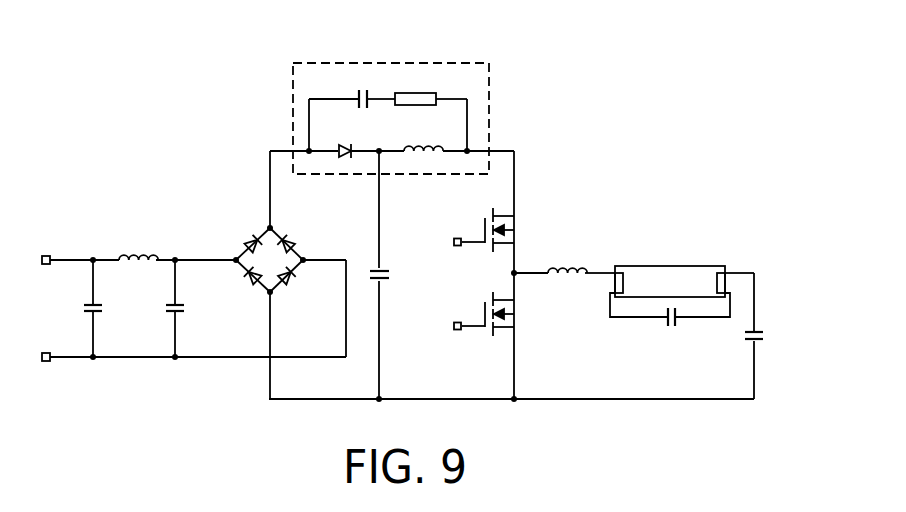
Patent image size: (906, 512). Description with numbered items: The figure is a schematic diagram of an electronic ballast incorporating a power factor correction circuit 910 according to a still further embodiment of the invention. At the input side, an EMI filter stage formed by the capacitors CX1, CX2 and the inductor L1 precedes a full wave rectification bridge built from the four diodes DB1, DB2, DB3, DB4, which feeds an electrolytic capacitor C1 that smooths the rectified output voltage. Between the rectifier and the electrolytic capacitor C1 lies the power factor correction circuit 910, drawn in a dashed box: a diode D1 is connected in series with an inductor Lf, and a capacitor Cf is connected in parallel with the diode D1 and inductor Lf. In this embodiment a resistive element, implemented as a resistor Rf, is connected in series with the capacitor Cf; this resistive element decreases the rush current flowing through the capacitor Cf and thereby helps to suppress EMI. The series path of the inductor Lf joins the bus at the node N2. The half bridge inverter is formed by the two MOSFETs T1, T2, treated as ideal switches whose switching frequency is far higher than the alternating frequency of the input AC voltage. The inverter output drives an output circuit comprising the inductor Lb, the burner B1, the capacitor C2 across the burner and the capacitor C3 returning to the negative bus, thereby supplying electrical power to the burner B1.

The power factor correction circuit 910 is at (293, 82).
The node N2 is at (467, 151).
The capacitor Cf is at (363, 88).
The resistor Rf is at (415, 87).
The diode D1 is at (345, 141).
The inductor Lf is at (423, 138).
The input inductor L1 is at (138, 247).
The input capacitor CX1 is at (75, 308).
The input capacitor CX2 is at (157, 308).
The diode DB1 is at (301, 235).
The diode DB2 is at (238, 284).
The diode DB3 is at (301, 284).
The diode DB4 is at (238, 235).
The electrolytic capacitor C1 is at (388, 268).
The MOSFET T1 is at (479, 229).
The MOSFET T2 is at (479, 313).
The ballast inductor Lb is at (567, 259).
The burner B1 is at (670, 281).
The resonant capacitor C2 is at (663, 328).
The DC blocking capacitor C3 is at (766, 339).